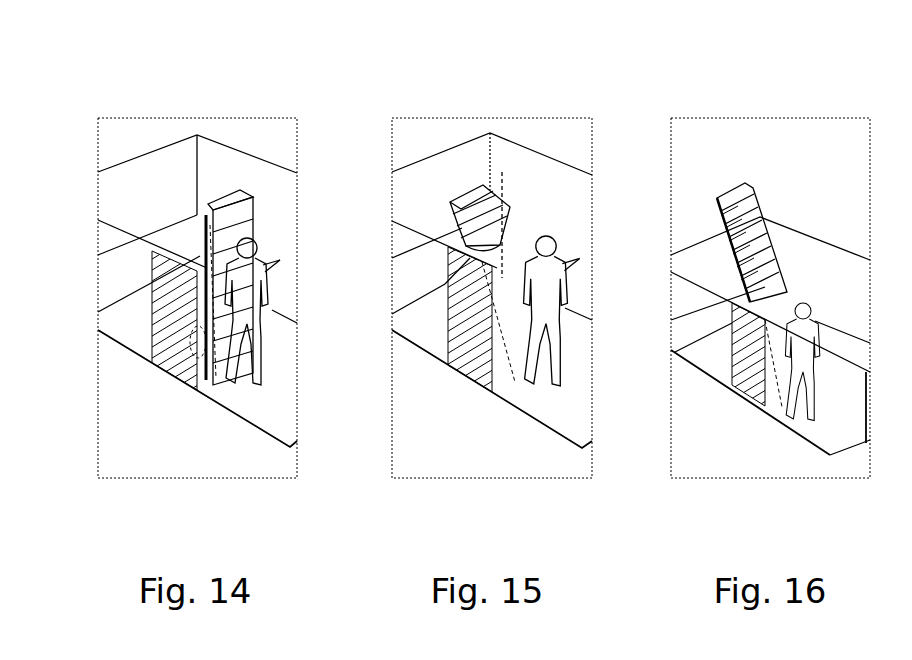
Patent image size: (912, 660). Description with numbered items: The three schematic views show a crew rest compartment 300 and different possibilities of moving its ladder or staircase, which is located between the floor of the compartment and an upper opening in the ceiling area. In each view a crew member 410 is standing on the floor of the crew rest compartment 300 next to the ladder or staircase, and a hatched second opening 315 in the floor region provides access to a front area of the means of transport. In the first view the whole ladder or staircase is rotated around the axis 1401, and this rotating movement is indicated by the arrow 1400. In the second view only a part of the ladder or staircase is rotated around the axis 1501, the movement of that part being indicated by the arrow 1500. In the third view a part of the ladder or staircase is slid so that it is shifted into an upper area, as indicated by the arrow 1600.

In FIG. 14, the crew rest compartment 300 is at (253, 140).
In FIG. 15, the crew rest compartment 300 is at (565, 143).
In FIG. 16, the crew rest compartment 300 is at (822, 210).
In FIG. 14, the second opening 315 is at (153, 330).
In FIG. 15, the second opening 315 is at (452, 362).
In FIG. 16, the second opening 315 is at (732, 387).
In FIG. 14, the crew member 410 is at (257, 272).
In FIG. 15, the crew member 410 is at (550, 272).
In FIG. 16, the crew member 410 is at (828, 380).
In FIG. 14, the arrow 1400 is at (157, 368).
In FIG. 14, the axis 1401 is at (208, 388).
In FIG. 15, the arrow 1500 is at (478, 243).
In FIG. 15, the axis 1501 is at (500, 185).
In FIG. 16, the arrow 1600 is at (737, 403).